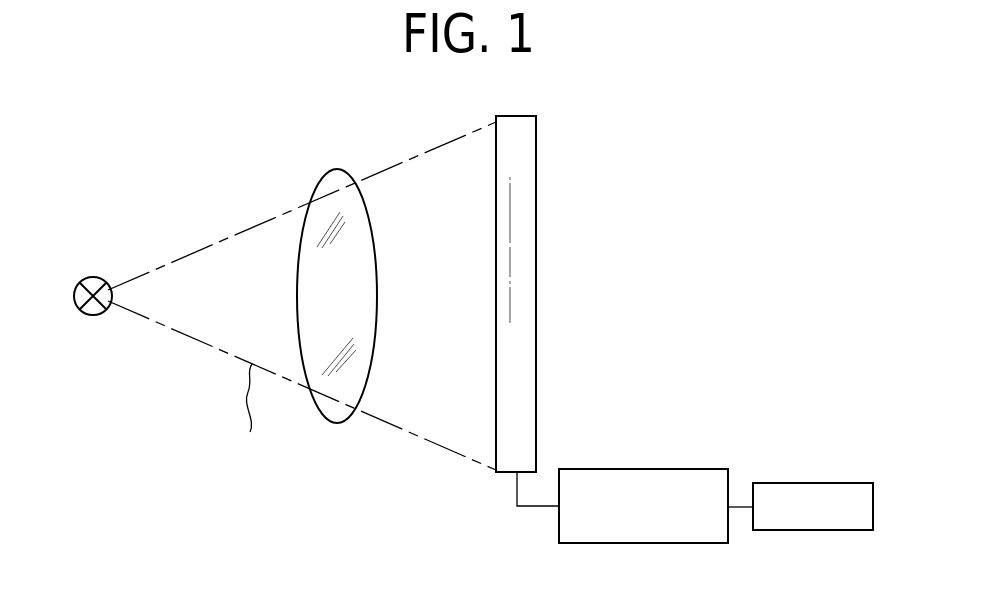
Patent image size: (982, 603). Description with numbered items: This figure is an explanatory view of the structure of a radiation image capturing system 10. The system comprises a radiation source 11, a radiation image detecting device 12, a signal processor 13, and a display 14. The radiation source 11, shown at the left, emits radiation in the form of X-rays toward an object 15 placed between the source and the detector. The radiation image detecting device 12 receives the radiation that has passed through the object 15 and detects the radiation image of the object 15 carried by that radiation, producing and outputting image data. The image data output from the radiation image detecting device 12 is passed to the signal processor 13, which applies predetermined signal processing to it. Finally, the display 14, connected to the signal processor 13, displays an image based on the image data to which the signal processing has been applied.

The radiation image capturing system 10 is at (130, 116).
The radiation source 11 is at (92, 277).
The radiation image detecting device 12 is at (536, 294).
The signal processor 13 is at (595, 469).
The display 14 is at (790, 483).
The object 15 is at (336, 168).